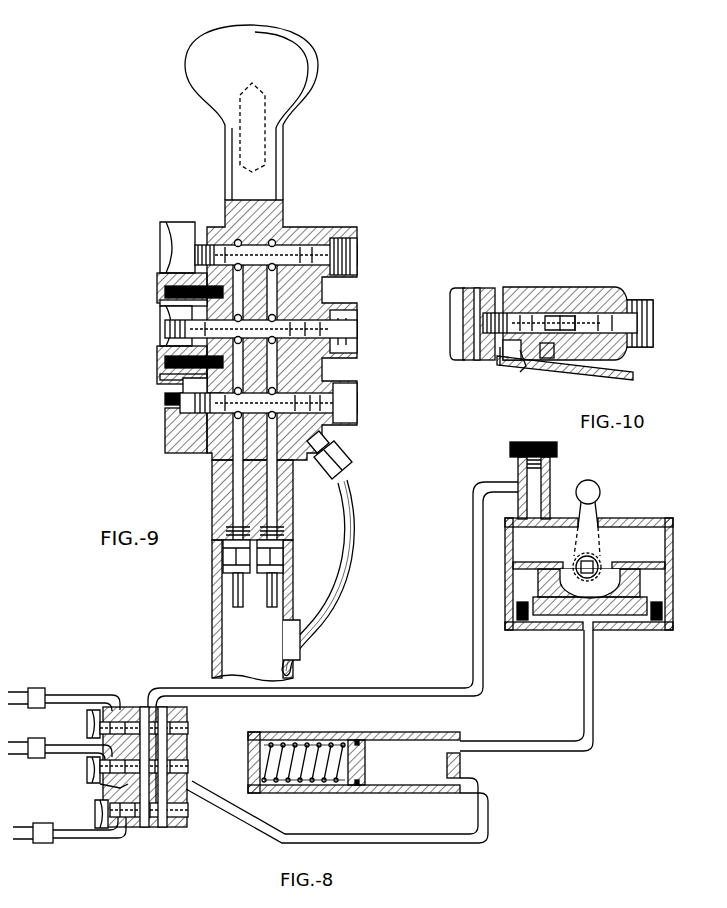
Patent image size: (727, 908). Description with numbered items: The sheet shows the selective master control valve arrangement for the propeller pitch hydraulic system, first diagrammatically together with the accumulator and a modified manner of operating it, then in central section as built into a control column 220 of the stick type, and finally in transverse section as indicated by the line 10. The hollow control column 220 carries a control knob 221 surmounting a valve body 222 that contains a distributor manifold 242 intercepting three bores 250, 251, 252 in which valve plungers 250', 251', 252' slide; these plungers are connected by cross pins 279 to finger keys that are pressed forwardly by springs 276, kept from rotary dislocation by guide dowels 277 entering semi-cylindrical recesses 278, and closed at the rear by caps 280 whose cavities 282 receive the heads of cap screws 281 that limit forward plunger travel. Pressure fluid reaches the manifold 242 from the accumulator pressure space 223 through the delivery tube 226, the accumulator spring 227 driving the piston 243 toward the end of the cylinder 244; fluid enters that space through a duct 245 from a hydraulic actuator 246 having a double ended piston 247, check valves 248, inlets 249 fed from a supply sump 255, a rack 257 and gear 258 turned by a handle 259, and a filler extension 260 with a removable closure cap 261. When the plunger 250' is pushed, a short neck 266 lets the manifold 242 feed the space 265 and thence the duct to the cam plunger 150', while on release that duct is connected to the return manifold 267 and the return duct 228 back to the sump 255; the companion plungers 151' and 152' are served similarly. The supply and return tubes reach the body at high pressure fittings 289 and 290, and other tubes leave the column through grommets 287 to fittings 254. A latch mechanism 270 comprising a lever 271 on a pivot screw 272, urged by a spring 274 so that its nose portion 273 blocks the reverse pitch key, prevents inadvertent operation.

In FIG. 9, the control knob 221 is at (310, 78).
In FIG. 9, the distributor manifold 242 is at (262, 208).
In FIG. 10, the distributor manifold 242 is at (533, 310).
In FIG. 8, the distributor manifold 242 is at (165, 792).
In FIG. 9, the springs 276 is at (210, 240).
In FIG. 9, the return manifold 267 is at (280, 232).
In FIG. 10, the return manifold 267 is at (570, 310).
In FIG. 8, the return manifold 267 is at (145, 830).
In FIG. 9, the valve plunger 251' is at (299, 239).
In FIG. 8, the valve plunger 251' is at (133, 693).
In FIG. 9, the rearward closure caps 280 is at (357, 246).
In FIG. 10, the rearward closure caps 280 is at (653, 310).
In FIG. 9, the semi-cylindrical recesses 278 is at (157, 285).
In FIG. 9, the valve body 222 is at (355, 296).
In FIG. 10, the valve body 222 is at (615, 288).
In FIG. 8, the valve body 222 is at (175, 754).
In FIG. 9, the guide dowels 277 is at (160, 304).
In FIG. 9, the valve plunger 252' is at (273, 319).
In FIG. 8, the valve plunger 252' is at (209, 766).
In FIG. 9, the cap screws 281 is at (357, 316).
In FIG. 10, the cap screws 281 is at (648, 300).
In FIG. 9, the section line 10 is at (165, 333).
In FIG. 9, the cavities 282 is at (357, 350).
In FIG. 9, the cross pins 279 is at (165, 400).
In FIG. 10, the cross pins 279 is at (466, 290).
In FIG. 9, the valve plunger 250' is at (184, 462).
In FIG. 8, the valve plunger 250' is at (212, 810).
In FIG. 9, the fittings 254 is at (352, 460).
In FIG. 9, the high pressure fitting 290 is at (283, 556).
In FIG. 9, the high pressure fitting 289 is at (232, 566).
In FIG. 9, the return tube or duct 228 is at (277, 587).
In FIG. 8, the return tube or duct 228 is at (378, 694).
In FIG. 9, the delivery tube or duct 226 is at (233, 596).
In FIG. 8, the delivery tube or duct 226 is at (335, 842).
In FIG. 9, the control column 220 is at (210, 635).
In FIG. 9, the grommets 287 is at (300, 638).
In FIG. 10, the nose portion 273 is at (500, 362).
In FIG. 10, the pivot screw 272 is at (516, 374).
In FIG. 10, the spring 274 is at (527, 372).
In FIG. 10, the latch mechanism 270 is at (558, 392).
In FIG. 8, the latch mechanism 270 is at (100, 785).
In FIG. 10, the lever 271 is at (600, 378).
In FIG. 8, the closure cap 261 is at (510, 450).
In FIG. 8, the filler extension 260 is at (550, 478).
In FIG. 8, the handle 259 is at (594, 504).
In FIG. 8, the gear 258 is at (575, 562).
In FIG. 8, the supply sump 255 is at (632, 543).
In FIG. 8, the inlets 249 is at (466, 572).
In FIG. 8, the rack 257 is at (538, 582).
In FIG. 8, the double ended piston 247 is at (533, 600).
In FIG. 8, the hydraulic actuator 246 is at (682, 585).
In FIG. 8, the check valves 248 is at (515, 612).
In FIG. 8, the tube or duct 245 is at (584, 702).
In FIG. 8, the accumulator spring 227 is at (300, 748).
In FIG. 8, the piston 243 is at (368, 762).
In FIG. 8, the cylinder 244 is at (420, 732).
In FIG. 8, the pressure space 223 is at (425, 778).
In FIG. 8, the bore 251 is at (163, 723).
In FIG. 8, the bore 252 is at (163, 774).
In FIG. 8, the bore 250 is at (171, 818).
In FIG. 8, the space 265 is at (100, 797).
In FIG. 8, the short neck 266 is at (163, 830).
In FIG. 8, the plunger 151' is at (28, 689).
In FIG. 8, the plunger 152' is at (27, 738).
In FIG. 8, the plunger 150' is at (33, 847).